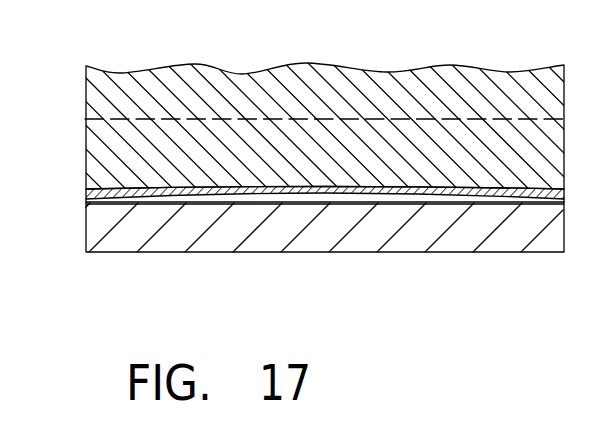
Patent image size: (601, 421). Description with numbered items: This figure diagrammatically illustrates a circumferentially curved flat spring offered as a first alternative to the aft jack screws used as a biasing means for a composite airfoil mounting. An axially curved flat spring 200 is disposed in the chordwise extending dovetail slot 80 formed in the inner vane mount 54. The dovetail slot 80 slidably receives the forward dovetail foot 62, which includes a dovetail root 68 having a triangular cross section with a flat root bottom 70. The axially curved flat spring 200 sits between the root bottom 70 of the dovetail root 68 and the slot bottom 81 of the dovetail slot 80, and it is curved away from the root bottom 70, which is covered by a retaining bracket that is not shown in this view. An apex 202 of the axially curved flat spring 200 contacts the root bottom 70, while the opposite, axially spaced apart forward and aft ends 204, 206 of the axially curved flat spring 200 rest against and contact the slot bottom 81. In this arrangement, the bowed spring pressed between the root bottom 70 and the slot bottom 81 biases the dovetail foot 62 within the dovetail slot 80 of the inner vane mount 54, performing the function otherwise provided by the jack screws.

The inner vane mount 54 is at (87, 218).
The forward dovetail foot 62 is at (447, 67).
The dovetail root 68 is at (105, 133).
The root bottom 70 is at (496, 190).
The dovetail slot 80 is at (87, 192).
The slot bottom 81 is at (222, 192).
The axially curved flat spring 200 is at (179, 189).
The apex 202 is at (323, 188).
The forward end 204 is at (87, 200).
The aft end 206 is at (564, 199).